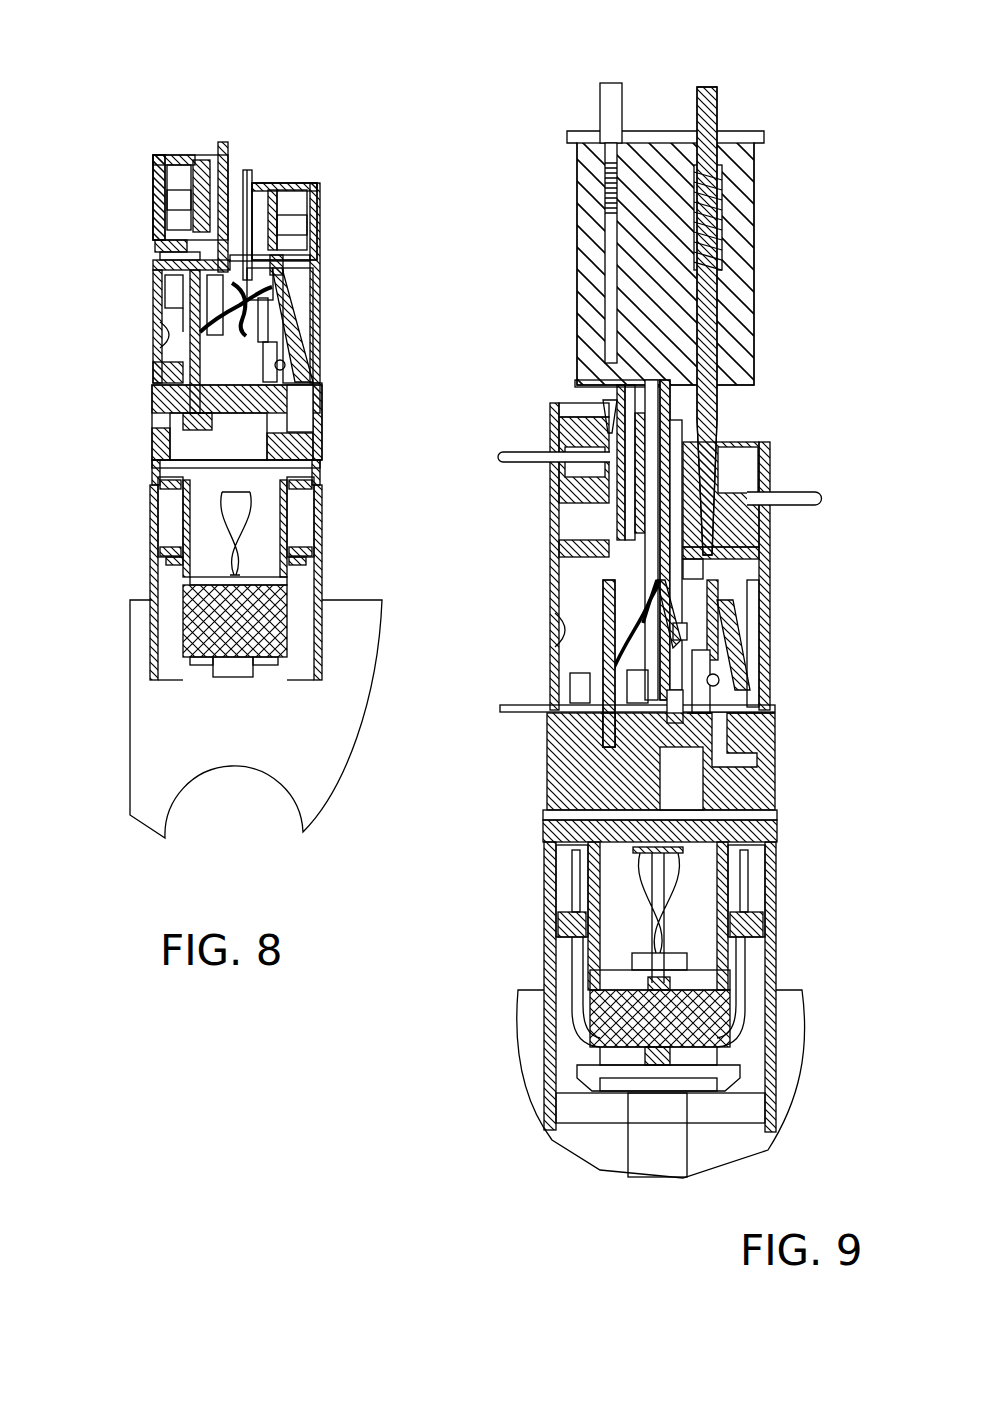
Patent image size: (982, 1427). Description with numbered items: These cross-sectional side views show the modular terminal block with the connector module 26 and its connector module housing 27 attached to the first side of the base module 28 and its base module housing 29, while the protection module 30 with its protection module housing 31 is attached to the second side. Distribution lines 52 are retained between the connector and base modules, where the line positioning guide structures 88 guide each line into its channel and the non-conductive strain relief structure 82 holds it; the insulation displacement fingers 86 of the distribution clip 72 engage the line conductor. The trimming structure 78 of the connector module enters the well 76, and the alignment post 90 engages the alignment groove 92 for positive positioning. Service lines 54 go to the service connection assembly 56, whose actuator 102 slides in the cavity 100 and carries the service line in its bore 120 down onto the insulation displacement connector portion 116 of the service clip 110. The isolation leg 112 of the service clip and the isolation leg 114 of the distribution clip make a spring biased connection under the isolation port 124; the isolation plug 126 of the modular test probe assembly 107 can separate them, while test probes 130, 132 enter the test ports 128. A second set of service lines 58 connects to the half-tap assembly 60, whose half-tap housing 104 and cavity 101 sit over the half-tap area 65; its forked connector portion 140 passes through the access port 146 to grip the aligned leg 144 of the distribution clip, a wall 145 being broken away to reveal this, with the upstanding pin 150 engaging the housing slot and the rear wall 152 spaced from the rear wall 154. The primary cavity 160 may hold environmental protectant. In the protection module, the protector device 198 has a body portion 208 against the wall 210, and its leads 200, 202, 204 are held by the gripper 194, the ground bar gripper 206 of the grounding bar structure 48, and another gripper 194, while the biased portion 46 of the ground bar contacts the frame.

In FIG. 8, the connector module 26 is at (130, 338).
In FIG. 9, the connector module 26 is at (800, 578).
In FIG. 8, the connector module housing 27 is at (150, 318).
In FIG. 9, the connector module housing 27 is at (740, 605).
In FIG. 8, the base module 28 is at (145, 446).
In FIG. 9, the base module 28 is at (510, 790).
In FIG. 8, the base module housing 29 is at (152, 465).
In FIG. 9, the base module housing 29 is at (560, 812).
In FIG. 8, the protection module 30 is at (105, 655).
In FIG. 9, the protection module 30 is at (472, 965).
In FIG. 8, the protection module housing 31 is at (150, 655).
In FIG. 9, the protection module housing 31 is at (548, 1000).
In FIG. 8, the biased portion 46 is at (235, 660).
In FIG. 8, the grounding bar structure 48 is at (258, 514).
In FIG. 9, the distribution lines 52 is at (560, 718).
In FIG. 9, the service lines 54 is at (790, 505).
In FIG. 8, the service connection assembly 56 is at (332, 175).
In FIG. 9, the second set of service lines 58 is at (520, 452).
In FIG. 8, the half-tap assembly 60 is at (178, 65).
In FIG. 8, the half-tap area 65 is at (175, 570).
In FIG. 8, the distribution clip 72 is at (185, 328).
In FIG. 9, the distribution clip 72 is at (600, 657).
In FIG. 8, the well 76 is at (322, 430).
In FIG. 9, the well 76 is at (750, 757).
In FIG. 8, the trimming structure 78 is at (312, 447).
In FIG. 9, the trimming structure 78 is at (740, 720).
In FIG. 8, the strain relief structure 82 is at (312, 395).
In FIG. 8, the insulation displacement fingers 86 is at (165, 405).
In FIG. 9, the insulation displacement fingers 86 is at (570, 765).
In FIG. 8, the line positioning guide structures 88 is at (172, 385).
In FIG. 8, the alignment post 90 is at (280, 350).
In FIG. 9, the alignment post 90 is at (715, 655).
In FIG. 8, the alignment groove 92 is at (305, 360).
In FIG. 9, the alignment groove 92 is at (740, 680).
In FIG. 9, the cavity 100 is at (800, 566).
In FIG. 9, the cavity of the half-tap assembly 101 is at (625, 520).
In FIG. 8, the actuator 102 is at (170, 160).
In FIG. 9, the actuator 102 is at (560, 430).
In FIG. 8, the half-tap housing 104 is at (160, 215).
In FIG. 9, the half-tap housing 104 is at (560, 500).
In FIG. 9, the modular test probe assembly 107 is at (770, 225).
In FIG. 8, the service clip 110 is at (280, 287).
In FIG. 9, the service clip 110 is at (700, 600).
In FIG. 8, the isolation leg 112 is at (266, 320).
In FIG. 9, the isolation leg 112 is at (680, 622).
In FIG. 8, the isolation leg 114 is at (212, 324).
In FIG. 9, the isolation leg 114 is at (620, 600).
In FIG. 8, the insulation displacement connector portion 116 is at (270, 260).
In FIG. 9, the insulation displacement connector portion 116 is at (720, 560).
In FIG. 8, the bore 120 is at (150, 196).
In FIG. 8, the isolation port 124 is at (240, 165).
In FIG. 9, the isolation plug 126 is at (665, 400).
In FIG. 8, the test ports 128 is at (200, 160).
In FIG. 9, the test ports 128 is at (560, 405).
In FIG. 9, the test probe 130 is at (720, 100).
In FIG. 9, the test probe 132 is at (600, 100).
In FIG. 9, the forked connector portion 140 is at (615, 560).
In FIG. 9, the aligned leg 144 is at (600, 615).
In FIG. 9, the wall 145 is at (590, 695).
In FIG. 9, the access port 146 is at (636, 512).
In FIG. 8, the upstanding pin 150 is at (170, 268).
In FIG. 8, the rear wall of half-tap housing 152 is at (190, 255).
In FIG. 9, the rear wall of half-tap housing 152 is at (622, 405).
In FIG. 9, the rear wall of service line assembly 154 is at (682, 441).
In FIG. 8, the primary cavity 160 is at (165, 345).
In FIG. 9, the primary cavity 160 is at (565, 635).
In FIG. 8, the gripper 194 is at (175, 486).
In FIG. 9, the gripper 194 is at (570, 890).
In FIG. 8, the protector device 198 is at (292, 640).
In FIG. 9, the protector device 198 is at (570, 1042).
In FIG. 9, the lead 200 is at (590, 960).
In FIG. 9, the lead 202 is at (660, 882).
In FIG. 9, the lead 204 is at (745, 980).
In FIG. 8, the ground bar gripper 206 is at (180, 512).
In FIG. 9, the ground bar gripper 206 is at (640, 870).
In FIG. 8, the body portion 208 is at (258, 660).
In FIG. 9, the body portion 208 is at (700, 1035).
In FIG. 8, the wall 210 is at (180, 566).